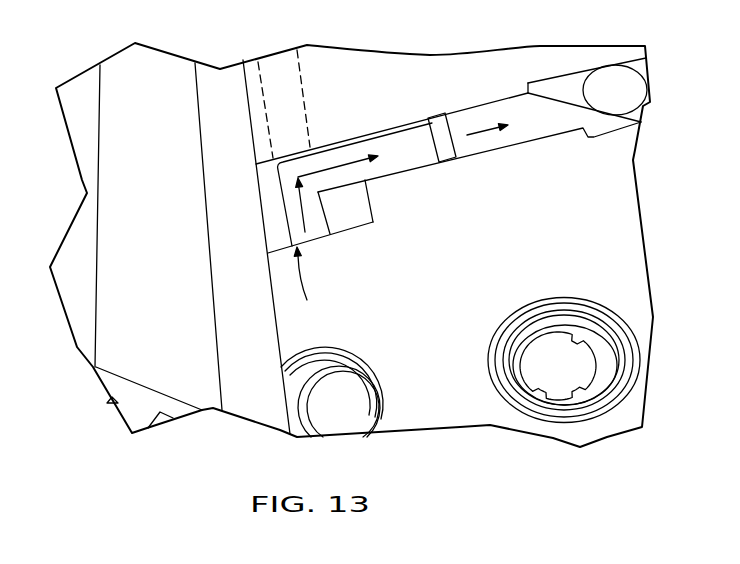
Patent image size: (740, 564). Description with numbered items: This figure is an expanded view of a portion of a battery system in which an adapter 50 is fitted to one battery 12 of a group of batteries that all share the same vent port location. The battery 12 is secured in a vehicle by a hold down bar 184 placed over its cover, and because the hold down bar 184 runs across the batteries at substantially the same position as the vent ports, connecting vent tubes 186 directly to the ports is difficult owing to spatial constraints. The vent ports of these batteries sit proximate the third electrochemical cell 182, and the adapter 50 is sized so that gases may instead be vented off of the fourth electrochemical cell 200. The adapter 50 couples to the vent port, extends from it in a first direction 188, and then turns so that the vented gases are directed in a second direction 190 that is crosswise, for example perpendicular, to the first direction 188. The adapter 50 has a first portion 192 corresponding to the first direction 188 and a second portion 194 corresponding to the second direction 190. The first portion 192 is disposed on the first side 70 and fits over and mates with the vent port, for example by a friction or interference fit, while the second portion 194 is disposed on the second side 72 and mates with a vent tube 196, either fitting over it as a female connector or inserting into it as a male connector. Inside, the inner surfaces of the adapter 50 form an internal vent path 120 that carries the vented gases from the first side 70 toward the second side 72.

The battery 12 is at (367, 70).
The adapter 50 is at (393, 125).
The first side 70 is at (305, 288).
The second side 72 is at (432, 110).
The internal vent path 120 is at (368, 178).
The third electrochemical cell 182 is at (352, 412).
The hold down bar 184 is at (163, 72).
The vent tubes 186 is at (303, 77).
The first direction 188 is at (305, 221).
The second direction 190 is at (483, 134).
The first portion 192 is at (326, 216).
The second portion 194 is at (337, 148).
The vent tube 196 is at (452, 140).
The fourth electrochemical cell 200 is at (553, 357).